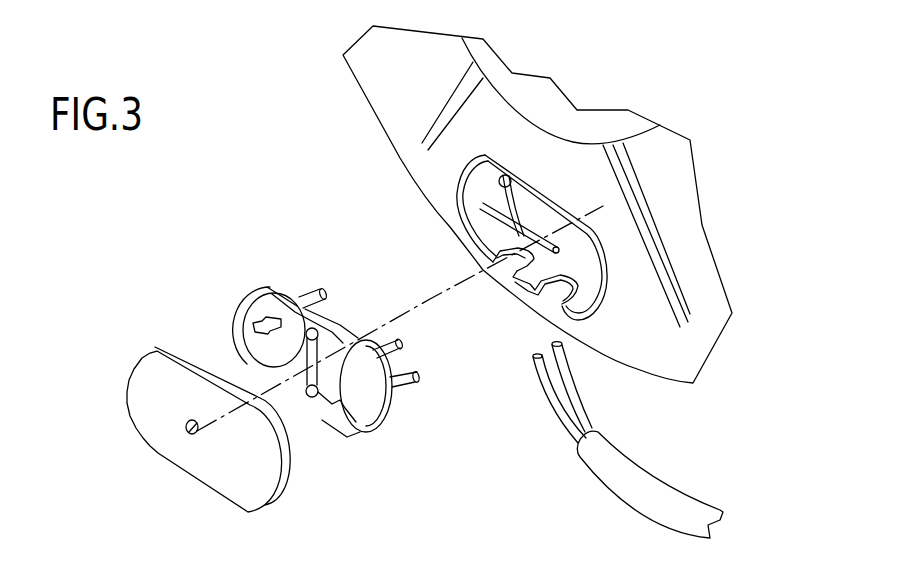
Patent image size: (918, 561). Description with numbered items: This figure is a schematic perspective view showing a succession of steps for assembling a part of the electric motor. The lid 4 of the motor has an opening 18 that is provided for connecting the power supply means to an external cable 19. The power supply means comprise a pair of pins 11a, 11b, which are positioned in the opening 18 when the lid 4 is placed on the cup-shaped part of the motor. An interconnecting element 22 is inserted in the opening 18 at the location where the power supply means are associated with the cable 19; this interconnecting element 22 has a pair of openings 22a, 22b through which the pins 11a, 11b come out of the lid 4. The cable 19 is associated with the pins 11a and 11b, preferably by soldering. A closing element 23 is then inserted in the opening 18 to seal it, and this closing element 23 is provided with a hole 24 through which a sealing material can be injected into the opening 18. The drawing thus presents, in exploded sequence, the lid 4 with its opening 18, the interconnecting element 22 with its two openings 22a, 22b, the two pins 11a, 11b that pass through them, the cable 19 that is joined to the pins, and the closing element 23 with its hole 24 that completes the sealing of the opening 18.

The lid 4 is at (392, 82).
The pin 11a is at (503, 205).
The pin 11b is at (608, 277).
The opening 18 is at (511, 240).
The external cable 19 is at (667, 467).
The interconnecting element 22 is at (385, 410).
The opening 22a is at (260, 323).
The opening 22b is at (347, 376).
The closing element 23 is at (217, 456).
The hole 24 is at (183, 421).